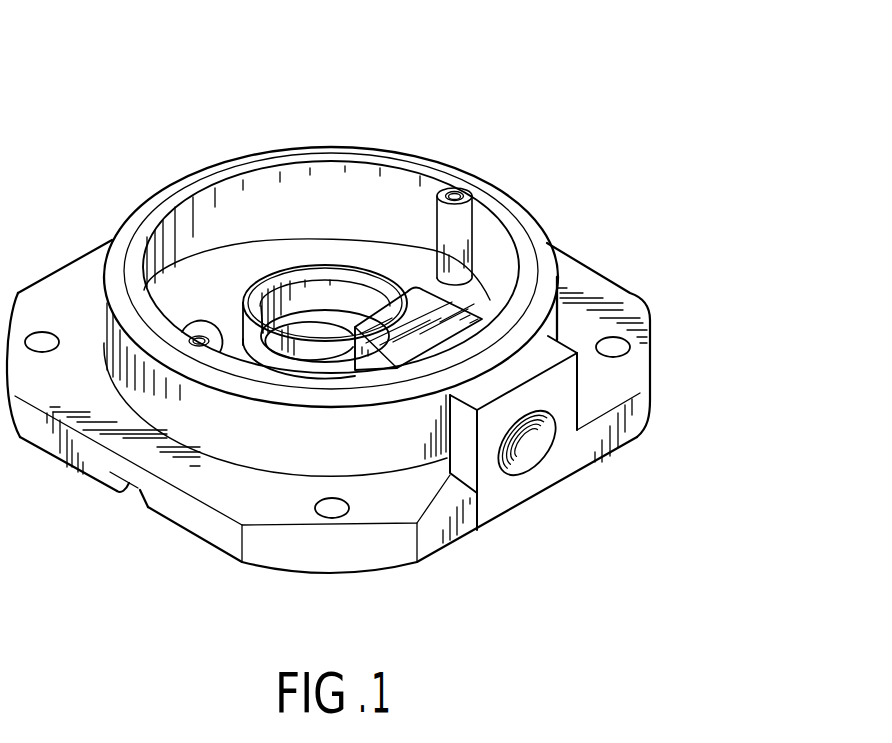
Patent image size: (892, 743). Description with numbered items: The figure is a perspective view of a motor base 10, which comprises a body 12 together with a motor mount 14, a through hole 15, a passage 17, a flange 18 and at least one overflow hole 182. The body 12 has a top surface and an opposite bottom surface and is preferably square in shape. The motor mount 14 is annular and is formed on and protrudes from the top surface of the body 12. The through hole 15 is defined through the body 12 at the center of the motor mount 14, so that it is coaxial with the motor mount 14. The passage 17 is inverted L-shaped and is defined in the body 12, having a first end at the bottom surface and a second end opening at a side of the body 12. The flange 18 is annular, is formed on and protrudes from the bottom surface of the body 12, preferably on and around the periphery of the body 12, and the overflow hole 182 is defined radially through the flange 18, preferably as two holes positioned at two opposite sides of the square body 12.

The motor base 10 is at (357, 337).
The body 12 is at (608, 296).
The motor mount 14 is at (130, 231).
The through hole 15 is at (303, 330).
The passage 17 is at (530, 453).
The flange 18 is at (182, 540).
The overflow hole 182 is at (140, 490).